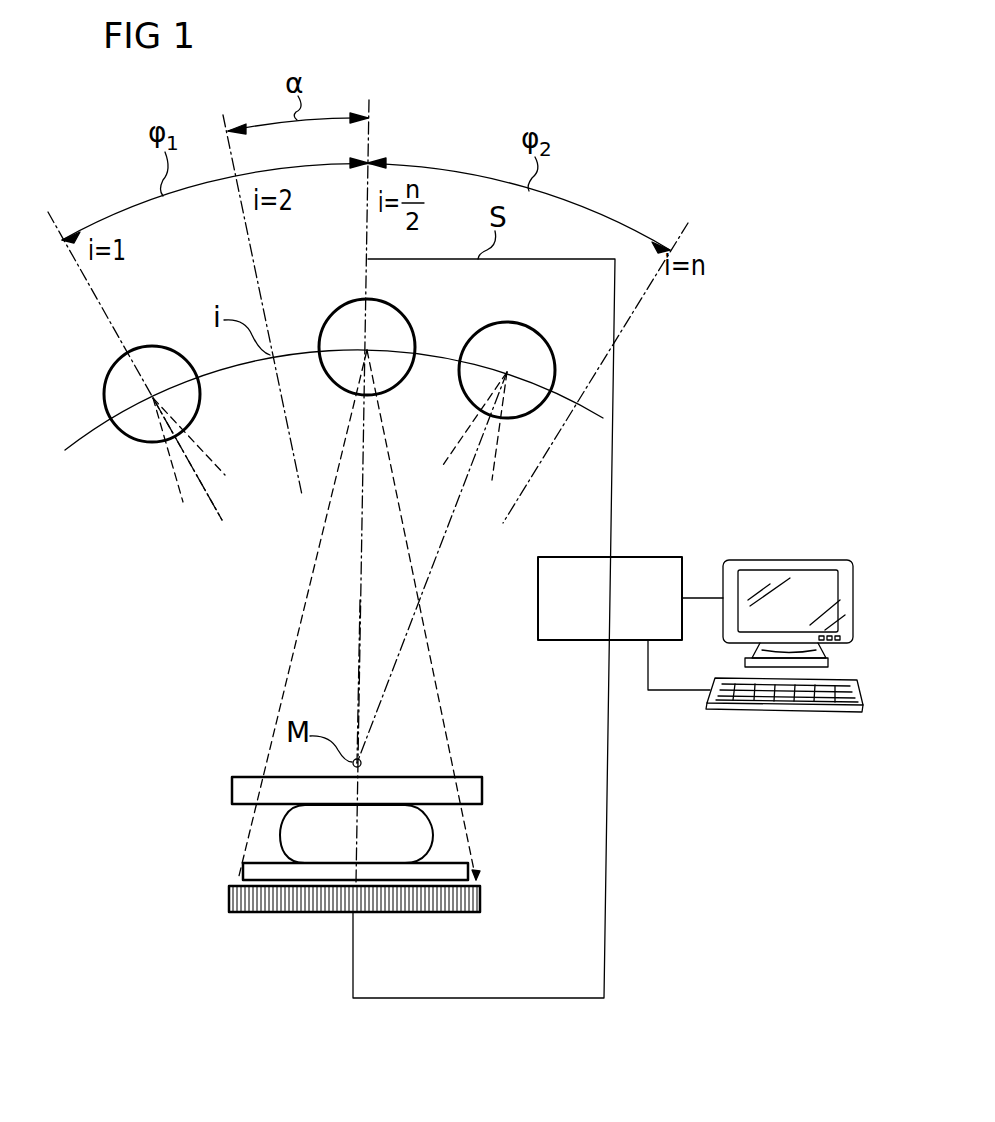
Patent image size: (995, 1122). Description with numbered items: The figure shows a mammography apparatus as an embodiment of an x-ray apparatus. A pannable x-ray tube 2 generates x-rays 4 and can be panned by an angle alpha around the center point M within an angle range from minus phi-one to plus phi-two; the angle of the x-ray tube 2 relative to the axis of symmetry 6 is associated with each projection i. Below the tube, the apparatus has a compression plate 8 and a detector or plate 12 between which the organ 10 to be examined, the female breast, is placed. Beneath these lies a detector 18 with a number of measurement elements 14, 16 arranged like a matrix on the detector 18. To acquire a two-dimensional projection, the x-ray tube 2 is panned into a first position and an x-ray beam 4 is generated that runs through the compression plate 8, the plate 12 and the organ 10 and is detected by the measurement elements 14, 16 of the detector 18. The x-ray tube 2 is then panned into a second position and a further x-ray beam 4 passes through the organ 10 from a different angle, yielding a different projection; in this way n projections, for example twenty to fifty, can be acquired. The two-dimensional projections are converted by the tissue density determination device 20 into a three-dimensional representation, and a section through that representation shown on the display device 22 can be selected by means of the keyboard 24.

The x-ray tube 2 is at (341, 309).
The x-rays 4 is at (176, 487).
The axis of symmetry 6 is at (357, 680).
The compression plate 8 is at (232, 788).
The organ to be examined 10 is at (288, 834).
The detector or plate 12 is at (243, 868).
The measurement elements 14 is at (440, 912).
The measurement elements 16 is at (300, 912).
The detector 18 is at (478, 882).
The tissue density determination device 20 is at (648, 556).
The display device 22 is at (785, 559).
The keyboard 24 is at (783, 712).